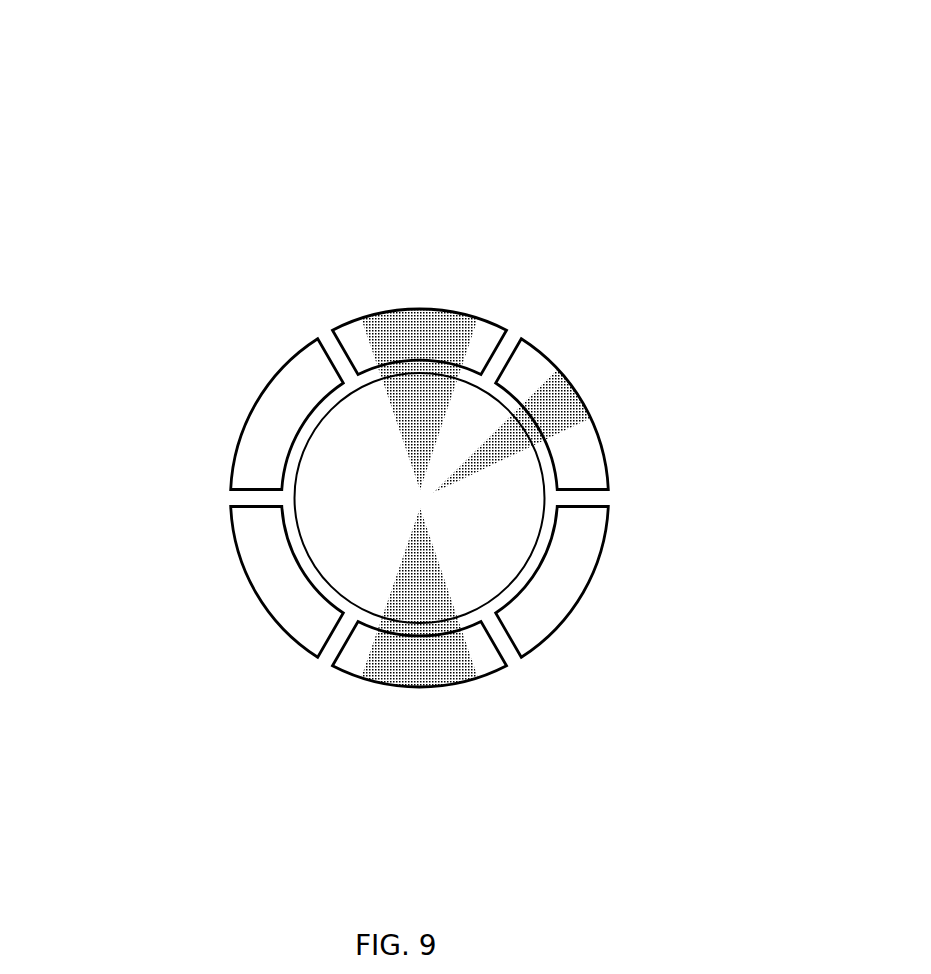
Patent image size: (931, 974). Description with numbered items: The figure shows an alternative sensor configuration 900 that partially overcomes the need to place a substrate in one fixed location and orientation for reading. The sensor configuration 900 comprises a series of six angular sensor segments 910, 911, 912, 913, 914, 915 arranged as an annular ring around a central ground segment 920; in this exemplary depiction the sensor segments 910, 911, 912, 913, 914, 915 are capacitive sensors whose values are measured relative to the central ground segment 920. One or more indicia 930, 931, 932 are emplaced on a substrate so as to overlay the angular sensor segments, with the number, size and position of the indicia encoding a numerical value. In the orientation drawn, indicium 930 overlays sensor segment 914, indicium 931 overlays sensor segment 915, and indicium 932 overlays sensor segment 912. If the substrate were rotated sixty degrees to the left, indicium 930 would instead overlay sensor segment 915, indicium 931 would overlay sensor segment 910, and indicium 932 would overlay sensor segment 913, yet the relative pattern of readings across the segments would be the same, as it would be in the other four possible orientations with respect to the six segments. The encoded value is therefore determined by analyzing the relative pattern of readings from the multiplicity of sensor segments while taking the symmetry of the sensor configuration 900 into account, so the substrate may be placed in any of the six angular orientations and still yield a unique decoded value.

The sensor configuration 900 is at (442, 142).
The angular sensor segment 910 is at (215, 442).
The angular sensor segment 911 is at (237, 588).
The angular sensor segment 912 is at (359, 698).
The angular sensor segment 913 is at (553, 655).
The angular sensor segment 914 is at (618, 442).
The angular sensor segment 915 is at (380, 298).
The central ground segment 920 is at (535, 527).
The indicium 930 is at (553, 383).
The indicium 931 is at (428, 318).
The indicium 932 is at (407, 657).